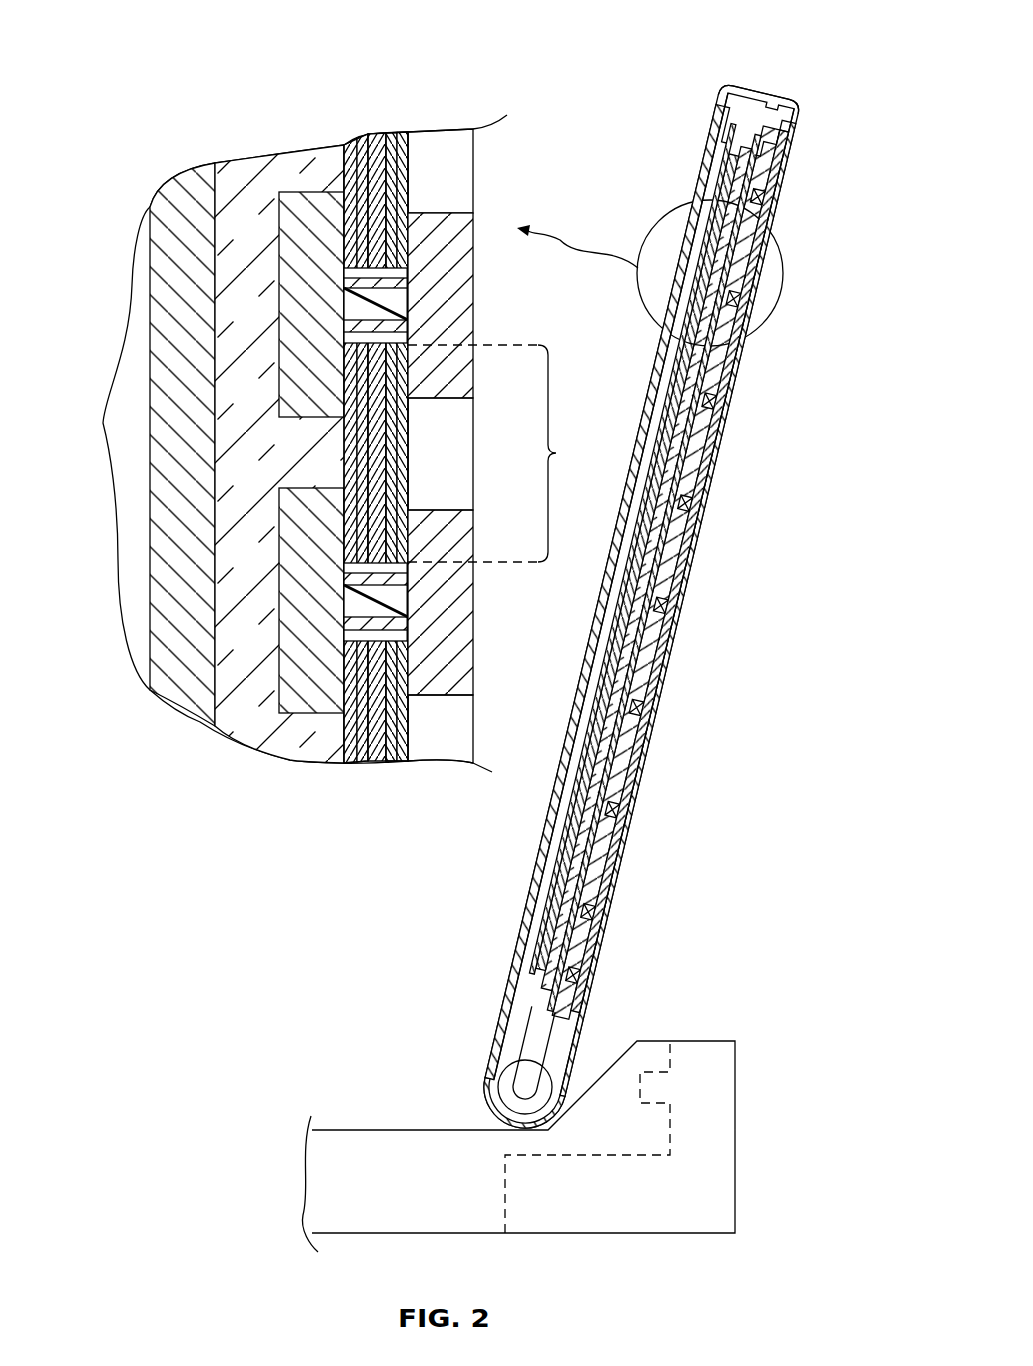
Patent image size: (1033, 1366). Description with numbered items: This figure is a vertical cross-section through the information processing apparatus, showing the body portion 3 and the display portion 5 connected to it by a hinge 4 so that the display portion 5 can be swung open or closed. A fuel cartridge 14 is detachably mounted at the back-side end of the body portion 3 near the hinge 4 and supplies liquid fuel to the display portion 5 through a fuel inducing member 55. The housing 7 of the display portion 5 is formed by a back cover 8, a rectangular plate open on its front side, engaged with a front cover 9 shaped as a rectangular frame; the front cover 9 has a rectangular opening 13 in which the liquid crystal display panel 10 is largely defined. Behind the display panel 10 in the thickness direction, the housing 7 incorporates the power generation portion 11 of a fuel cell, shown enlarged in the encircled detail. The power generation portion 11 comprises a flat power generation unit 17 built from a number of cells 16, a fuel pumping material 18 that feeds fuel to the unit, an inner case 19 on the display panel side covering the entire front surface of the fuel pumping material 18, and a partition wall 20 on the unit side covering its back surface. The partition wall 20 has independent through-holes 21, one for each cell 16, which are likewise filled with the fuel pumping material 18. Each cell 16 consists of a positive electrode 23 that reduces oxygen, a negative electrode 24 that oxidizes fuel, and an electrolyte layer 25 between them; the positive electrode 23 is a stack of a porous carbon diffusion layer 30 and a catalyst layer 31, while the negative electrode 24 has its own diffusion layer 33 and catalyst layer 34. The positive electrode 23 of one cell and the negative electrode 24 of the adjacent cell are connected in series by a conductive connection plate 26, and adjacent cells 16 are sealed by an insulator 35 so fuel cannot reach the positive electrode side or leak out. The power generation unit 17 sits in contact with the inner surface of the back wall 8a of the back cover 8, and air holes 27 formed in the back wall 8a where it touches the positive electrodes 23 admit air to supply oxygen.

The body portion 3 is at (358, 1083).
The hinge 4 is at (500, 1087).
The display portion 5 is at (722, 545).
The housing 7 is at (662, 30).
The back cover 8 is at (763, 90).
The back wall 8a is at (790, 150).
The front cover 9 is at (722, 120).
The liquid crystal display panel 10 is at (590, 690).
The power generation portion 11 is at (146, 152).
The opening 13 is at (700, 195).
The fuel cartridge 14 is at (735, 1152).
The cells 16 is at (420, 738).
The power generation unit 17 is at (418, 180).
The fuel pumping material 18 is at (250, 185).
The inner case 19 is at (155, 300).
The partition wall 20 is at (305, 200).
The through-holes 21 is at (317, 448).
The positive electrodes 23 is at (448, 45).
The negative electrodes 24 is at (382, 848).
The electrolyte layers 25 is at (373, 133).
The connection plate 26 is at (412, 618).
The air holes 27 is at (475, 448).
The diffusion layer 30 is at (402, 130).
The catalyst layer 31 is at (390, 130).
The diffusion layer 33 is at (345, 762).
The catalyst layer 34 is at (357, 762).
The insulator 35 is at (412, 292).
The fuel inducing member 55 is at (540, 1027).